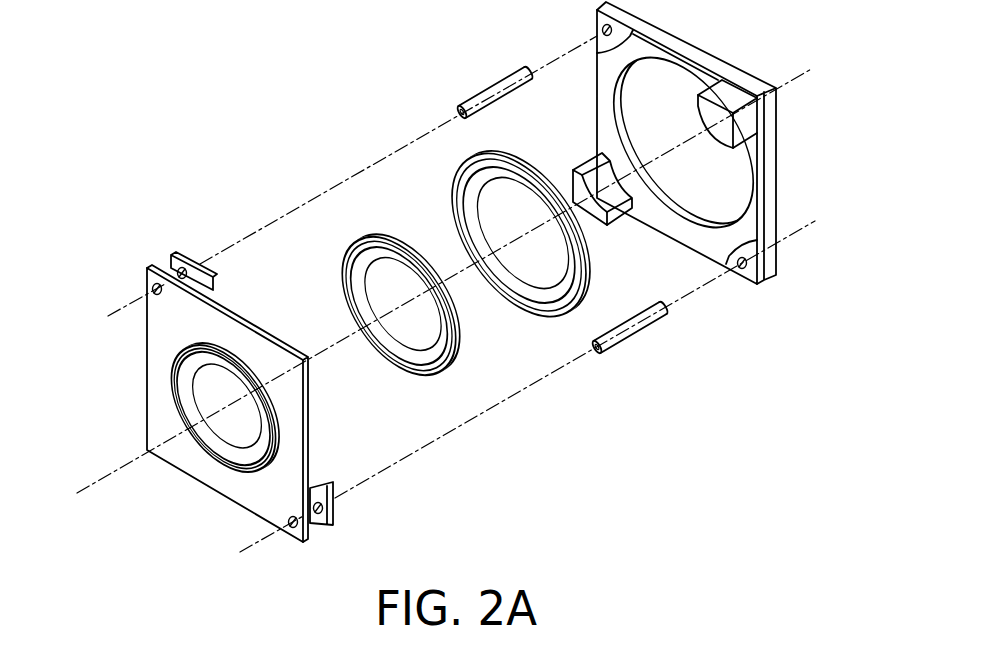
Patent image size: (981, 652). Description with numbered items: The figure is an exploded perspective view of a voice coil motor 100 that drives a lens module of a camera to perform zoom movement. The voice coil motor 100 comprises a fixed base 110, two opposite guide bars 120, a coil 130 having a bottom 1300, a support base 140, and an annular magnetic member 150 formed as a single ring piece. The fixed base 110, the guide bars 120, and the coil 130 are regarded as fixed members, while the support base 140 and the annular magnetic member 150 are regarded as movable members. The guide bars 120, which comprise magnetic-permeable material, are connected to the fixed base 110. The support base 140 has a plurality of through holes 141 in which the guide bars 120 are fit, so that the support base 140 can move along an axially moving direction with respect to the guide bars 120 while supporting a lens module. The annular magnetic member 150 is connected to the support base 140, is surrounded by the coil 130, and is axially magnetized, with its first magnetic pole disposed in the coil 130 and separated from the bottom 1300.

The voice coil motor 100 is at (122, 35).
The fixed base 110 is at (590, 123).
The guide bars 120 is at (478, 89).
The coil 130 is at (466, 302).
The bottom of the coil 1300 is at (518, 292).
The support base 140 is at (229, 398).
The through holes 141 is at (333, 523).
The annular magnetic member 150 is at (338, 281).